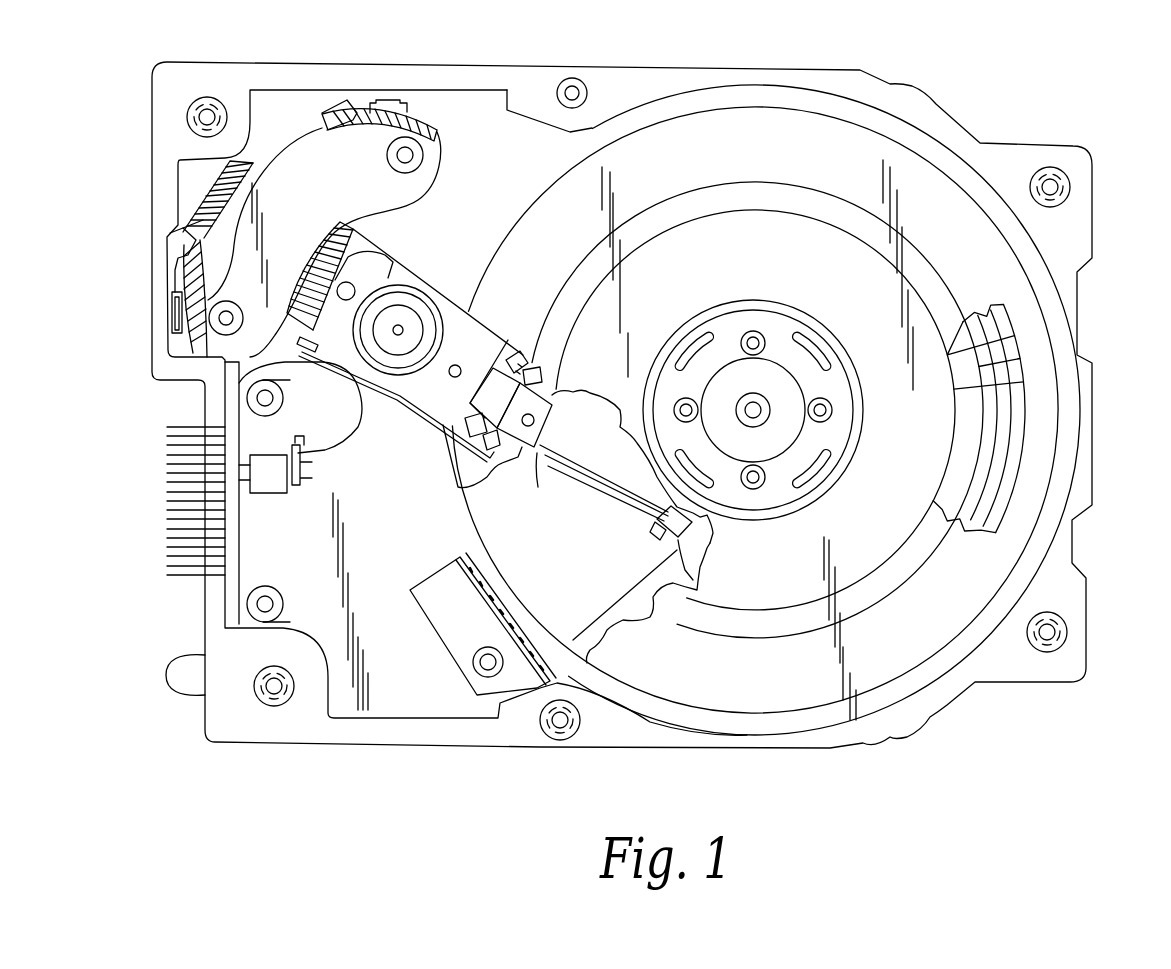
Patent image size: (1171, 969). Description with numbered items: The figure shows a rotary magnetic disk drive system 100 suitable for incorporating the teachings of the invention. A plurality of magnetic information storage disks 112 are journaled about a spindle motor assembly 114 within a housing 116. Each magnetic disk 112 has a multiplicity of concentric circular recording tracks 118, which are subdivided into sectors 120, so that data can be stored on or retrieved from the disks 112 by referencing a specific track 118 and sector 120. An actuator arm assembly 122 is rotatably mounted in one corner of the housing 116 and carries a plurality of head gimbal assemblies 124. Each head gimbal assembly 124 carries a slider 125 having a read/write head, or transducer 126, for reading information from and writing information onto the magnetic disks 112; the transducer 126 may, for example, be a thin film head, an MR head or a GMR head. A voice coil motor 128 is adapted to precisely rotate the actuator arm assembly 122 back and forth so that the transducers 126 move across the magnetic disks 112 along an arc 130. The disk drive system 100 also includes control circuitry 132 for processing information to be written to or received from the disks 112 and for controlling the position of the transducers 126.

The rotary magnetic disk drive system 100 is at (832, 762).
The magnetic information storage disk 112 is at (903, 652).
The spindle motor assembly 114 is at (780, 363).
The housing 116 is at (572, 752).
The concentric circular recording track 118 is at (1024, 470).
The sector 120 is at (1022, 355).
The actuator arm assembly 122 is at (445, 297).
The head gimbal assembly 124 is at (662, 537).
The slider 125 is at (710, 583).
The transducer 126 is at (718, 543).
The voice coil motor 128 is at (301, 180).
The arc 130 is at (614, 612).
The control circuitry 132 is at (185, 262).